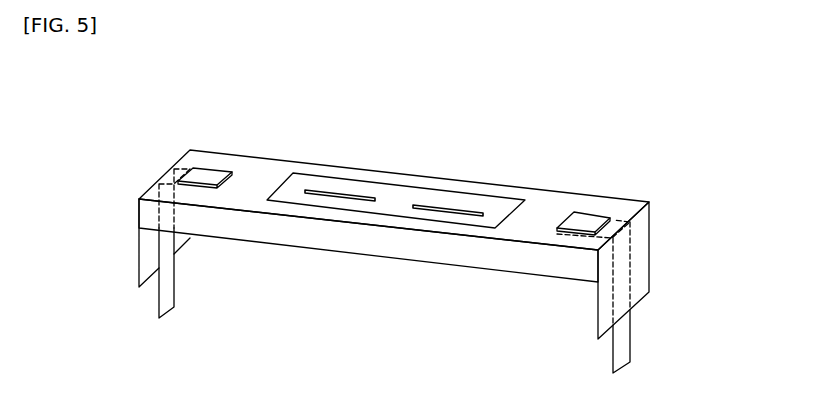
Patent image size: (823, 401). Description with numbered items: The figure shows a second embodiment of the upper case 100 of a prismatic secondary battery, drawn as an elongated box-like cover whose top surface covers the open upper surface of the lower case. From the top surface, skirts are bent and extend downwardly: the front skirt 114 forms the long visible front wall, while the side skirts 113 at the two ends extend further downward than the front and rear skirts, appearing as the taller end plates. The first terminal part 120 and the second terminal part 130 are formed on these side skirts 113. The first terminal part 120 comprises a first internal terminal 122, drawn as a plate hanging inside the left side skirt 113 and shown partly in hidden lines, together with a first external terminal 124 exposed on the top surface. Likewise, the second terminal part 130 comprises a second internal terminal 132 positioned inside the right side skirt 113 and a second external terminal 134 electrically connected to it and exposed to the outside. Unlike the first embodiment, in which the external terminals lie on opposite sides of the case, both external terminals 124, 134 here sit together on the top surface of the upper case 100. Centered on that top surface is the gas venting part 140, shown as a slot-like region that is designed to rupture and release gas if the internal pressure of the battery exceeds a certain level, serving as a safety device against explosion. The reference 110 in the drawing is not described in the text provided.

The upper case 100 is at (695, 243).
The substrate (board) 110 is at (570, 195).
The side skirt 113 is at (189, 238).
The front skirt 114 is at (365, 237).
The first terminal part 120 is at (62, 155).
The first internal terminal 122 is at (167, 262).
The first external terminal 124 is at (207, 178).
The second terminal part 130 is at (718, 114).
The second internal terminal 132 is at (626, 342).
The second external terminal 134 is at (590, 220).
The gas venting part 140 is at (397, 192).